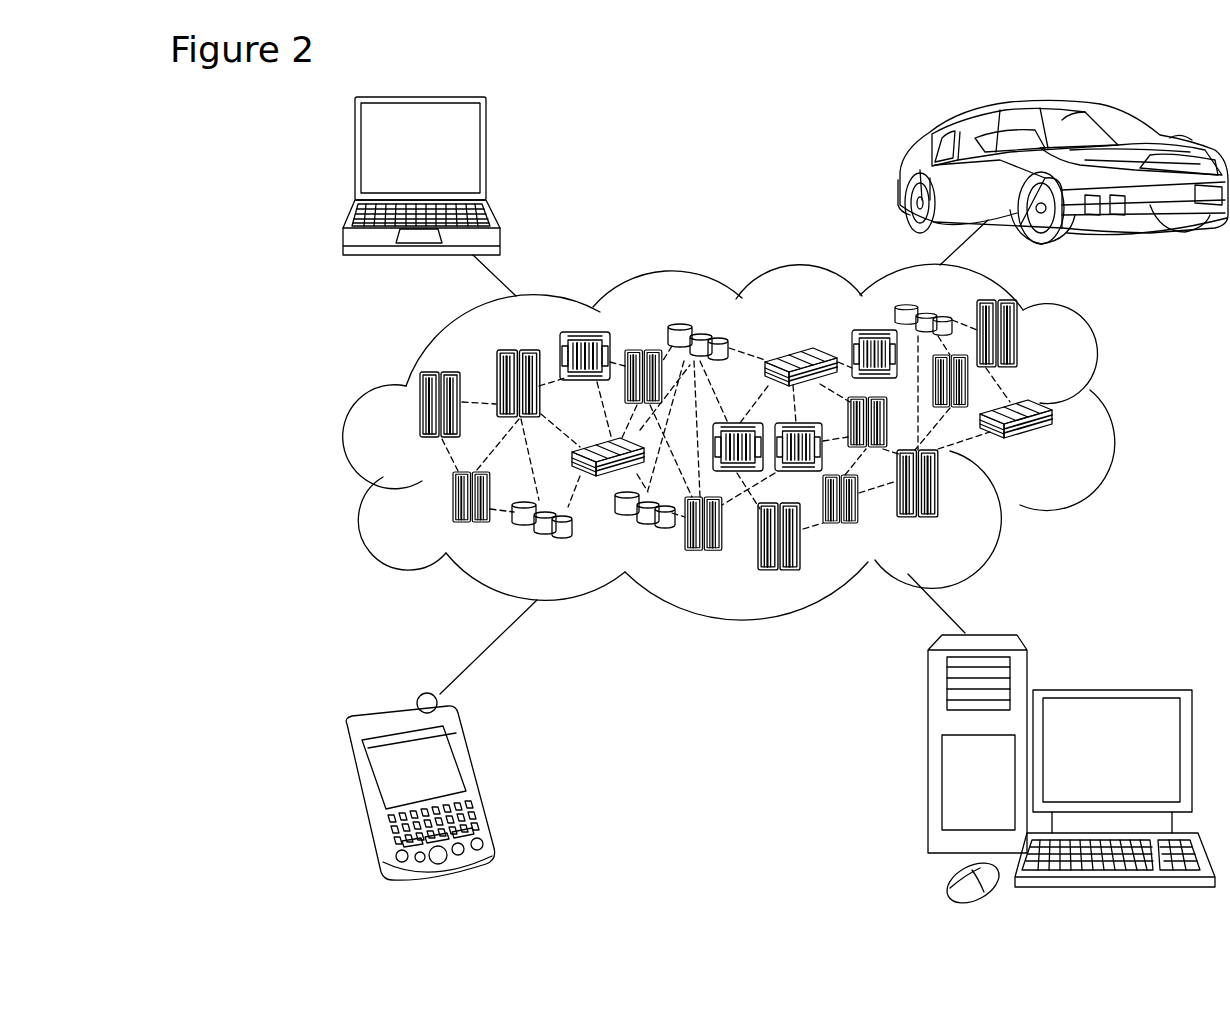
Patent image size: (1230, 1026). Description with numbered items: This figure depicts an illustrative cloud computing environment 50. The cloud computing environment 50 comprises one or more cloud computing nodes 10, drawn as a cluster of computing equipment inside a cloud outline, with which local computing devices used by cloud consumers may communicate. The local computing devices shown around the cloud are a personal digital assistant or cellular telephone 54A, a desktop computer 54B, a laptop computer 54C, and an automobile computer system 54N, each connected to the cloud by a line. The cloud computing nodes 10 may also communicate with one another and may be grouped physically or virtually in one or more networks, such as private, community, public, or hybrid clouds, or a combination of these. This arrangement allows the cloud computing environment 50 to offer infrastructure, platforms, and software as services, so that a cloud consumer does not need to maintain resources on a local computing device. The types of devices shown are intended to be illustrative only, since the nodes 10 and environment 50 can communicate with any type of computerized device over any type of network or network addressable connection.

The cloud computing node 10 is at (1055, 443).
The cloud computing environment 50 is at (1112, 412).
The personal digital assistant or cellular telephone 54A is at (473, 776).
The desktop computer 54B is at (1110, 690).
The laptop computer 54C is at (486, 155).
The automobile computer system 54N is at (897, 170).